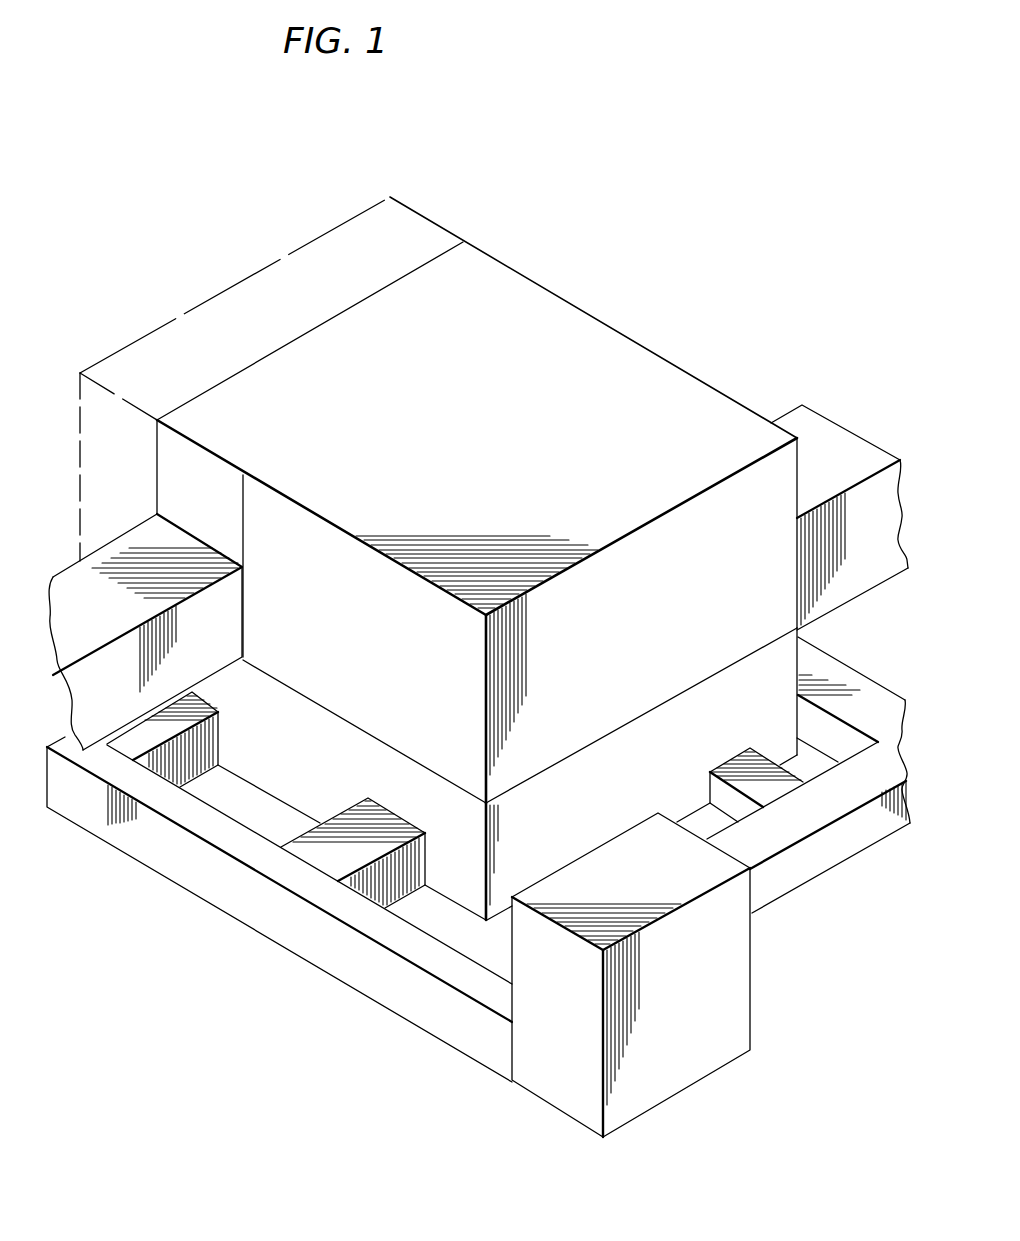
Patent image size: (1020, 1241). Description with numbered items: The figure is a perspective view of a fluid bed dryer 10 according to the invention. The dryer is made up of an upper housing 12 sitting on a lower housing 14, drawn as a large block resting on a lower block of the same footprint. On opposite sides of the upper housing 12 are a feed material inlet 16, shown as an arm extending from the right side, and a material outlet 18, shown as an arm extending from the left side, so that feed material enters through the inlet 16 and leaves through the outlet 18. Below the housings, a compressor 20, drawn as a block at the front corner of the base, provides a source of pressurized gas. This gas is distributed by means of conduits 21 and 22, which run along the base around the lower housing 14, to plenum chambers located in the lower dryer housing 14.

The fluid bed dryer 10 is at (664, 316).
The upper housing 12 is at (527, 277).
The lower housing 14 is at (654, 781).
The feed material inlet 16 is at (868, 437).
The material outlet 18 is at (63, 565).
The compressor 20 is at (687, 1017).
The conduit 21 is at (250, 905).
The conduit 22 is at (851, 836).